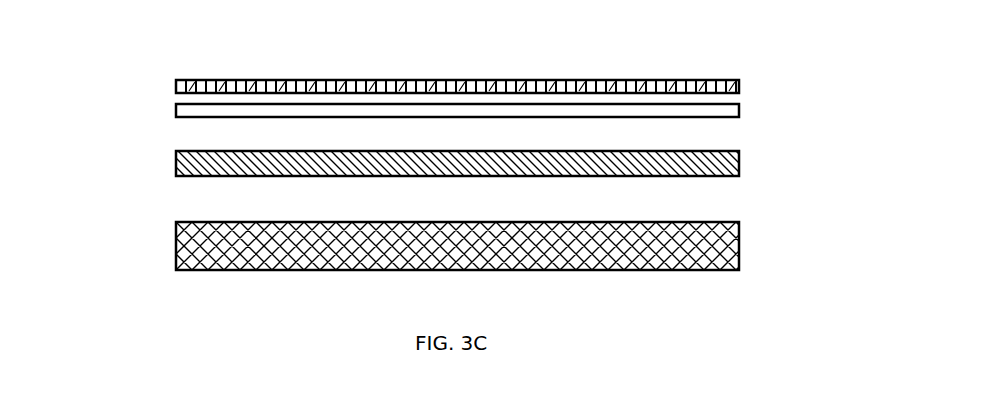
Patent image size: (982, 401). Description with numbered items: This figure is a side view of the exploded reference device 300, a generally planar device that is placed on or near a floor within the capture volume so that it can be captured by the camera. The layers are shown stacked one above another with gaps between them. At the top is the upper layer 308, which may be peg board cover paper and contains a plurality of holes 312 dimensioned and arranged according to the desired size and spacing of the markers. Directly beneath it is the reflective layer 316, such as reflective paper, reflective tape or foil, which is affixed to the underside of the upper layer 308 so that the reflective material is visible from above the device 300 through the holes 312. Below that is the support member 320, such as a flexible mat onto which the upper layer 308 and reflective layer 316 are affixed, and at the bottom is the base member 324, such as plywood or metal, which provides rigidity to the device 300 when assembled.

The reference device 300 is at (798, 138).
The upper layer 308 is at (176, 87).
The holes 312 is at (188, 80).
The reflective layer 316 is at (176, 110).
The support member 320 is at (176, 162).
The base member 324 is at (176, 243).